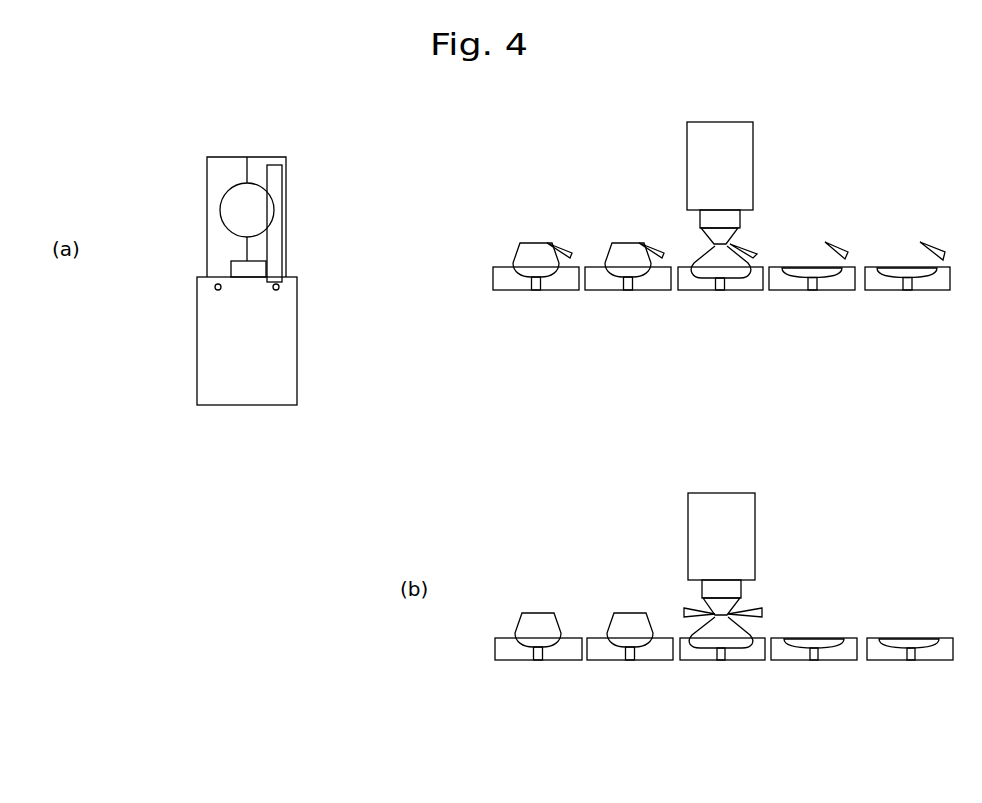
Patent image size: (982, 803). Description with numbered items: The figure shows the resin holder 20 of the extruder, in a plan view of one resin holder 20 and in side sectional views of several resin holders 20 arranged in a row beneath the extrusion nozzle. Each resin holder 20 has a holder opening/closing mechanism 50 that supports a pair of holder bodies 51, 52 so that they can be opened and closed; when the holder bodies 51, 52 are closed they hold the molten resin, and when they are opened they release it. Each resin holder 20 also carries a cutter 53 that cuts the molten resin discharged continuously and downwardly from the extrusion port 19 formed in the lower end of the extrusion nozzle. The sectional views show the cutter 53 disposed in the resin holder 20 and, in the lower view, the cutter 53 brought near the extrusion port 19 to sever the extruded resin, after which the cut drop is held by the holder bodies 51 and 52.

The extrusion port 19 is at (710, 250).
The resin holder 20 is at (556, 401).
The holder opening/closing mechanism 50 is at (290, 348).
The holder body 51 is at (212, 178).
The holder body 52 is at (257, 162).
The cutter 53 is at (275, 180).